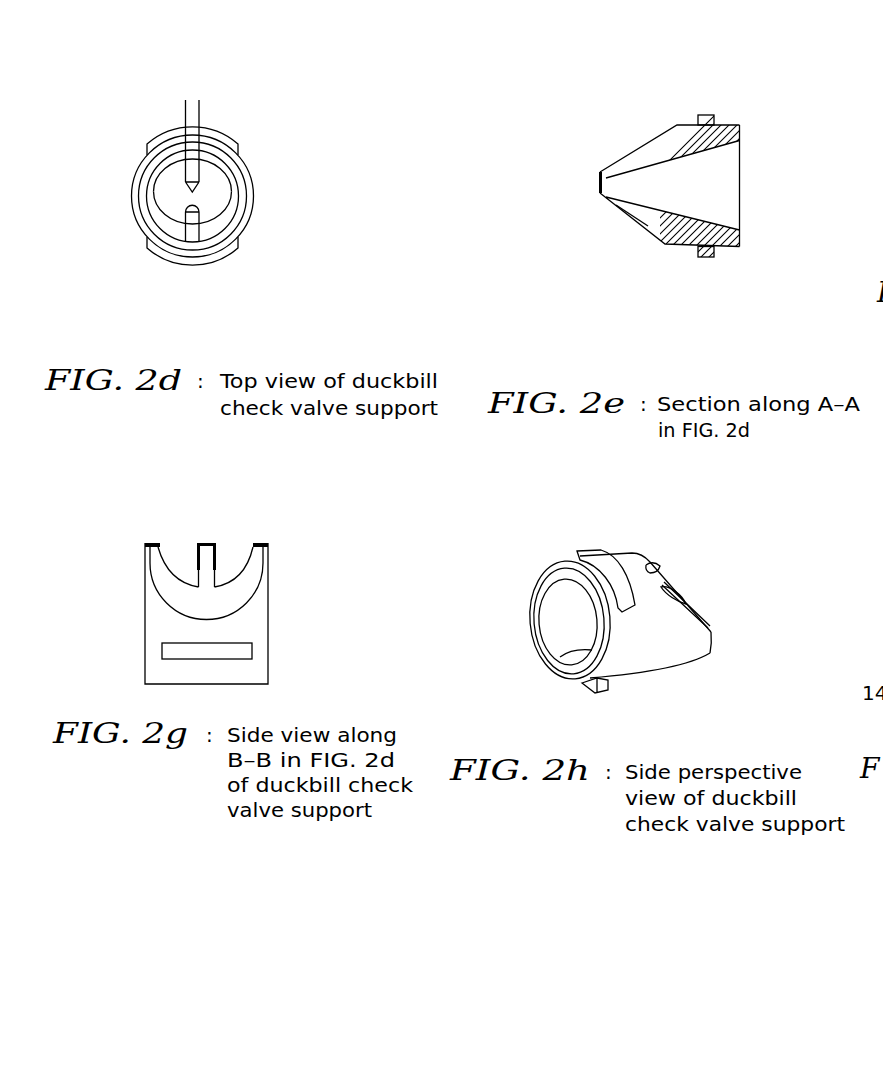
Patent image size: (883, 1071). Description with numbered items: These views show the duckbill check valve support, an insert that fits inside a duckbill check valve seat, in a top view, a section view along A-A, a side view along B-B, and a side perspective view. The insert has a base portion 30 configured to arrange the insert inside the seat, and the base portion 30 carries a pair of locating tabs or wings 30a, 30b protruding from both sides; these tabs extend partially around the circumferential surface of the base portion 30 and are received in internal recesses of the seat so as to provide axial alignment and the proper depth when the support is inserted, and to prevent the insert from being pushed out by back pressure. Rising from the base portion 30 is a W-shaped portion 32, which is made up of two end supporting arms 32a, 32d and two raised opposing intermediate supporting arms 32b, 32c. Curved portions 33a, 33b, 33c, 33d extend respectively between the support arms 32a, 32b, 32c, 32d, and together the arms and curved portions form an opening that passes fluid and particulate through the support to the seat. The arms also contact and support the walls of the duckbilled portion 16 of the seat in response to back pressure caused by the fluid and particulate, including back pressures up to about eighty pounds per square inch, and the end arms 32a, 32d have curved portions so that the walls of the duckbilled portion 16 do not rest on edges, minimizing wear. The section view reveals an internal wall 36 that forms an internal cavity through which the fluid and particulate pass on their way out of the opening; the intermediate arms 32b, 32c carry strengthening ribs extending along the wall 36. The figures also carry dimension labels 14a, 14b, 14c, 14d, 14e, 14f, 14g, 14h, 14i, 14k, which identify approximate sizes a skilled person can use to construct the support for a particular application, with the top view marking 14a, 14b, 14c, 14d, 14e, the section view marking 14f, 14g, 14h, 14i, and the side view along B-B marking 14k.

In FIG. 2d, the dimension 14a is at (147, 237).
In FIG. 2d, the dimension 14b is at (202, 188).
In FIG. 2d, the dimension 14c is at (210, 165).
In FIG. 2d, the dimension 14d is at (205, 160).
In FIG. 2d, the dimension 14e is at (230, 103).
In FIG. 2e, the dimension 14f is at (576, 148).
In FIG. 2e, the dimension 14g is at (665, 243).
In FIG. 2e, the dimension 14h is at (740, 140).
In FIG. 2e, the dimension 14i is at (740, 310).
In FIG. 2g, the dimension 14k is at (315, 505).
In FIG. 2g, the duckbilled portion 16 is at (190, 593).
In FIG. 2g, the base portion 30 is at (175, 670).
In FIG. 2h, the base portion 30 is at (643, 642).
In FIG. 2d, the locating tab or wing 30a is at (230, 142).
In FIG. 2e, the locating tab or wing 30a is at (702, 115).
In FIG. 2g, the locating tab or wing 30a is at (242, 648).
In FIG. 2h, the locating tab or wing 30a is at (592, 688).
In FIG. 2d, the locating tab or wing 30b is at (232, 255).
In FIG. 2e, the locating tab or wing 30b is at (705, 257).
In FIG. 2h, the locating tab or wing 30b is at (598, 550).
In FIG. 2e, the W-shaped portion 32 is at (650, 143).
In FIG. 2h, the W-shaped portion 32 is at (637, 559).
In FIG. 2g, the end supporting arm 32a is at (150, 542).
In FIG. 2h, the end supporting arm 32a is at (715, 635).
In FIG. 2d, the raised intermediate supporting arm 32b is at (160, 173).
In FIG. 2e, the raised intermediate supporting arm 32b is at (601, 172).
In FIG. 2g, the raised intermediate supporting arm 32b is at (205, 542).
In FIG. 2h, the raised intermediate supporting arm 32b is at (693, 603).
In FIG. 2d, the raised intermediate supporting arm 32c is at (165, 222).
In FIG. 2e, the raised intermediate supporting arm 32c is at (618, 212).
In FIG. 2h, the raised intermediate supporting arm 32c is at (673, 585).
In FIG. 2g, the end supporting arm 32d is at (258, 542).
In FIG. 2h, the end supporting arm 32d is at (657, 565).
In FIG. 2d, the curved portion 33a is at (235, 175).
In FIG. 2d, the curved portion 33b is at (166, 155).
In FIG. 2d, the curved portion 33c is at (238, 220).
In FIG. 2d, the curved portion 33d is at (163, 240).
In FIG. 2e, the internal wall 36 is at (673, 155).